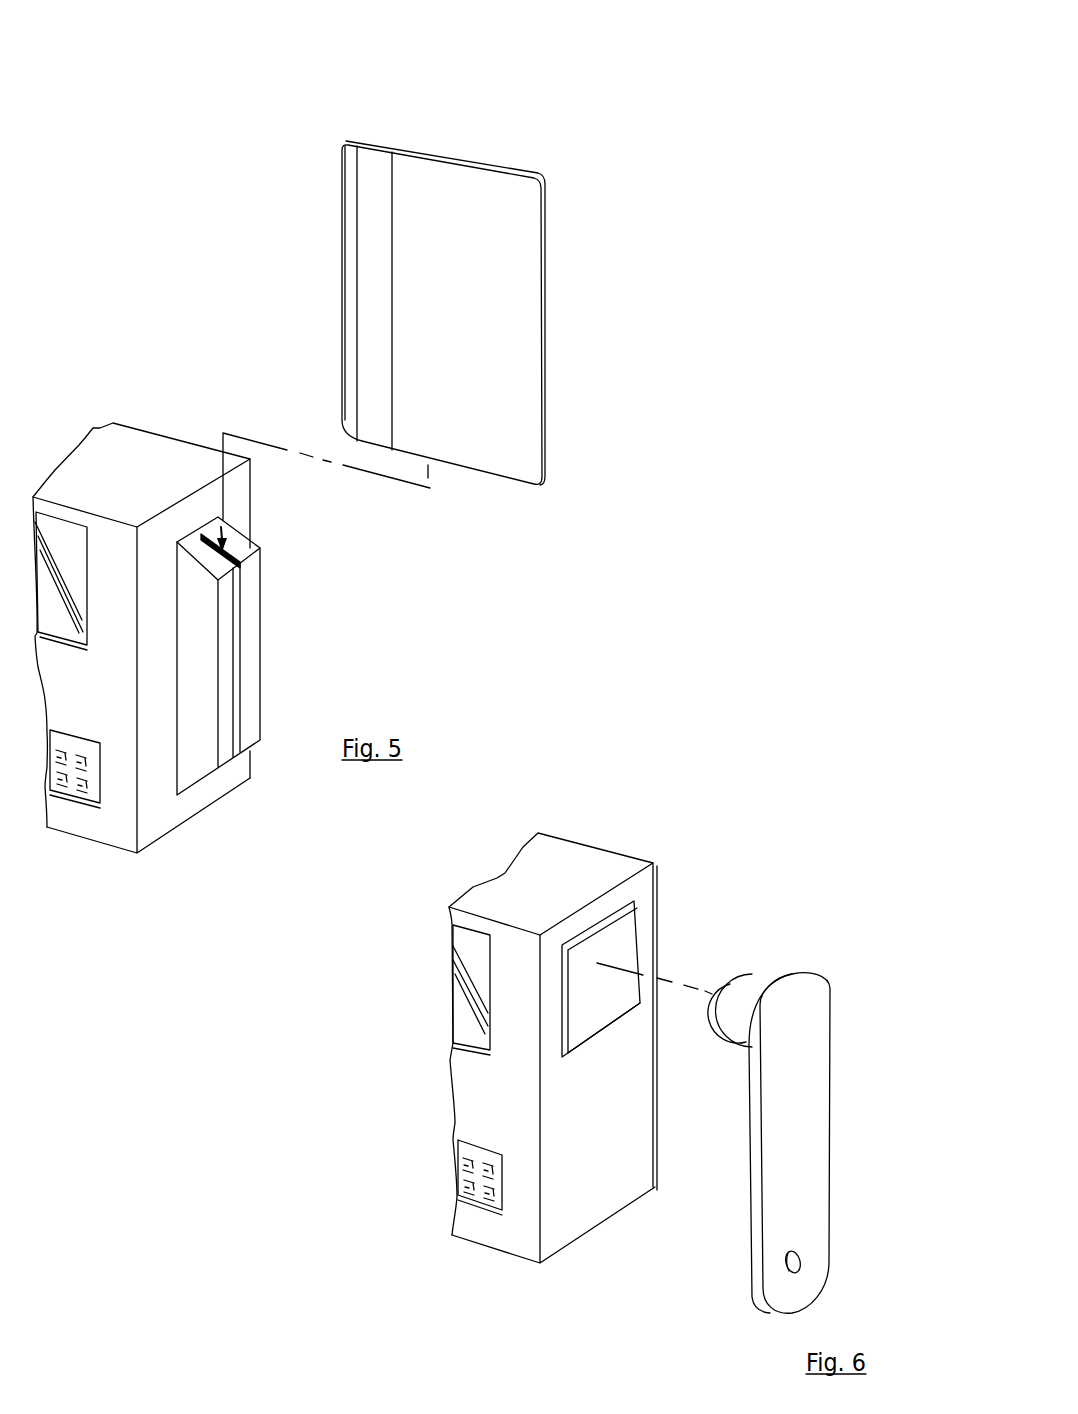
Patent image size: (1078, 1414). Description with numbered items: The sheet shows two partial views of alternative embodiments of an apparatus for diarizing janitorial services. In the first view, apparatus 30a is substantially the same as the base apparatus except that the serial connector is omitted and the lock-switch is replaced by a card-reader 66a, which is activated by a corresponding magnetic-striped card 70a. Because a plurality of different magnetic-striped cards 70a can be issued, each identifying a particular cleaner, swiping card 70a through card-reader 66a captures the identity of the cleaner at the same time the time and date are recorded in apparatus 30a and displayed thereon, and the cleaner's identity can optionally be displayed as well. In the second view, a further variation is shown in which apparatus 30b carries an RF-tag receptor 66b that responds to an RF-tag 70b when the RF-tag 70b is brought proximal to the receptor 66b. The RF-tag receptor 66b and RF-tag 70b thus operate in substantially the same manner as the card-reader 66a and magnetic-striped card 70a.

In FIG. 5, the apparatus 30a is at (99, 440).
In FIG. 5, the card-reader 66a is at (245, 603).
In FIG. 5, the magnetic-striped card 70a is at (473, 164).
In FIG. 6, the apparatus 30b is at (604, 868).
In FIG. 6, the RF-tag receptor 66b is at (637, 945).
In FIG. 6, the RF-tag 70b is at (803, 1007).